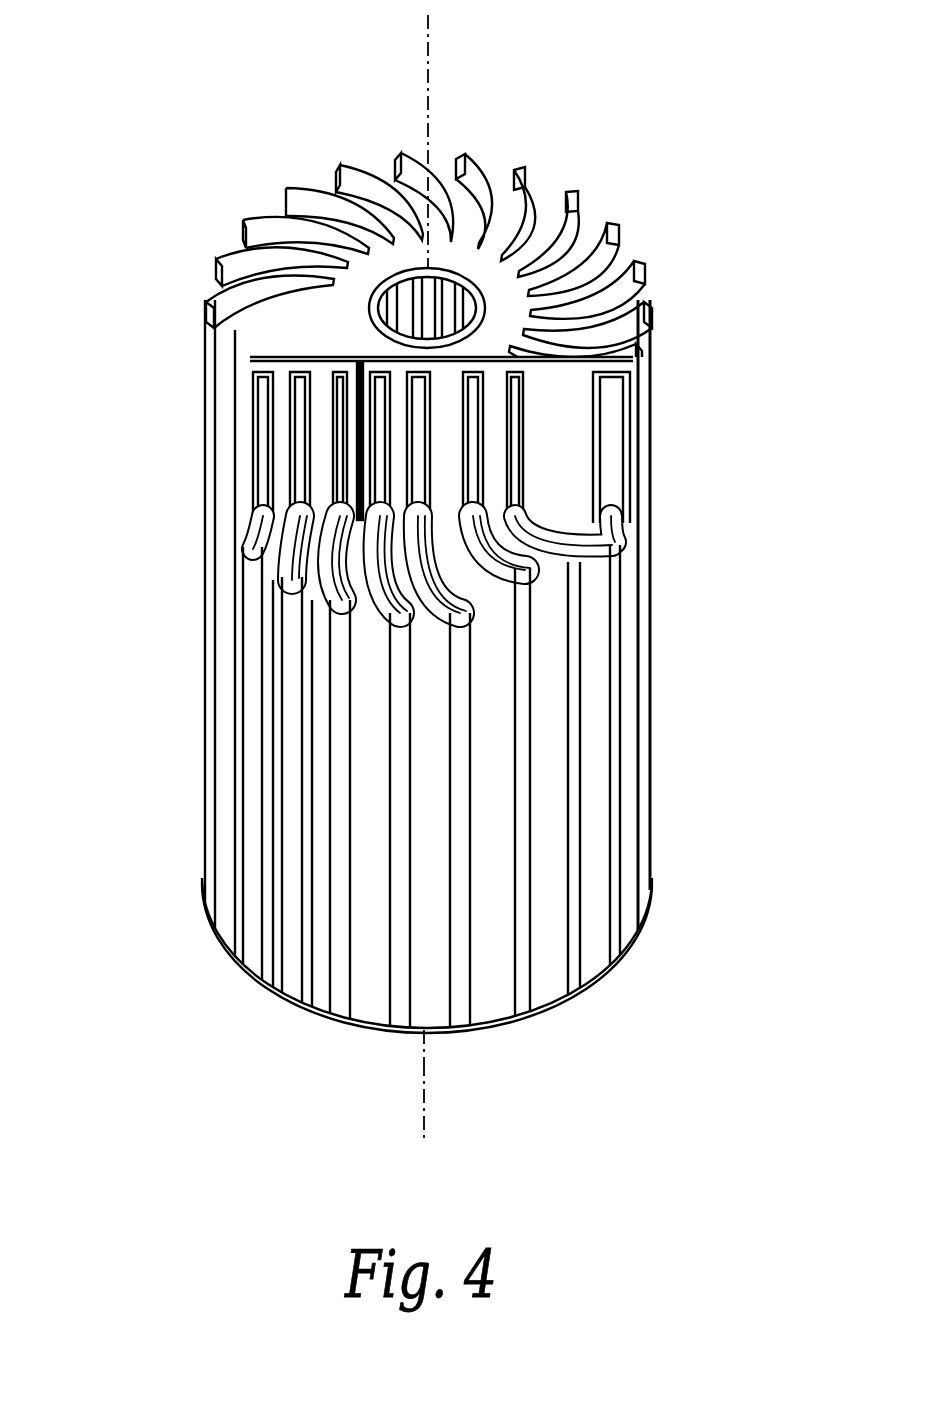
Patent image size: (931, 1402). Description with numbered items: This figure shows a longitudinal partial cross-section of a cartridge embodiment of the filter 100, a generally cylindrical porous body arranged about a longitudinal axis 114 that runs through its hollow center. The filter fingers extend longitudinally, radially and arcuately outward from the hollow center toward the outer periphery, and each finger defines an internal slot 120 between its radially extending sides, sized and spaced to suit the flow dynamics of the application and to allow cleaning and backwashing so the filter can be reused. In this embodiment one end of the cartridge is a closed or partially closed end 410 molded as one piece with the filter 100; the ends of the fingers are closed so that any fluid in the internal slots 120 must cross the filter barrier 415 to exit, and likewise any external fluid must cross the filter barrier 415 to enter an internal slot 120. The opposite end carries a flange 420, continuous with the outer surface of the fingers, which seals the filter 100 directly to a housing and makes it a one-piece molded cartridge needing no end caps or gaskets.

The filter 100 is at (306, 90).
The longitudinal axis 114 is at (430, 64).
The closed end 410 is at (484, 268).
The filter barrier 415 is at (641, 262).
The internal slot 120 is at (257, 400).
The flange 420 is at (530, 1015).